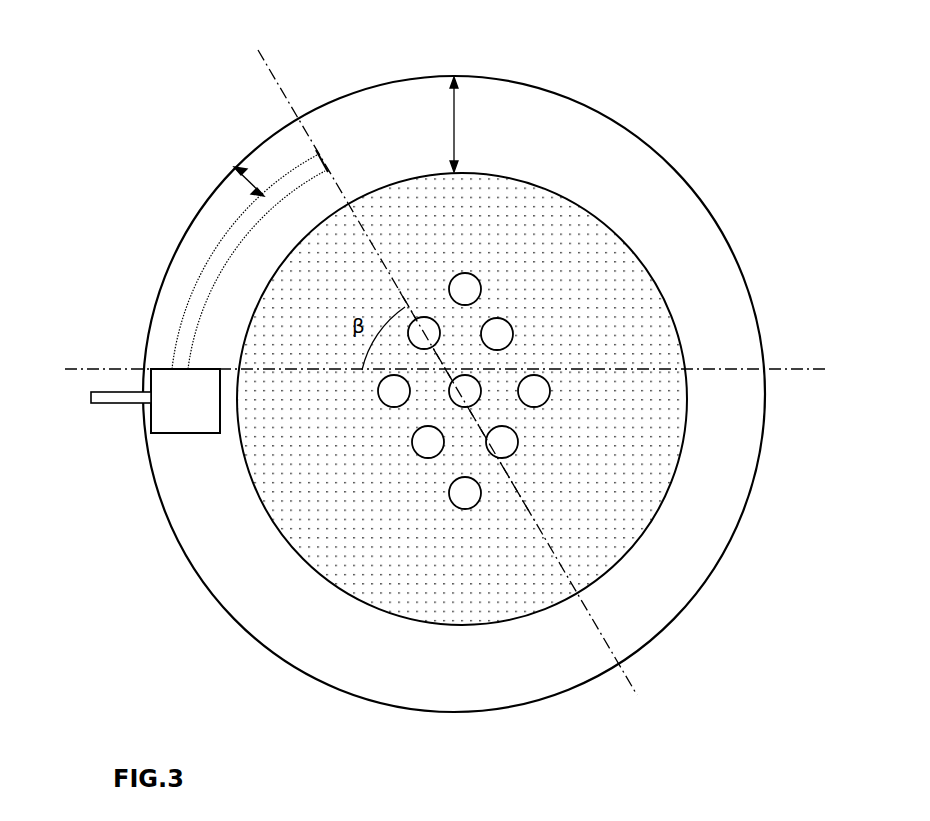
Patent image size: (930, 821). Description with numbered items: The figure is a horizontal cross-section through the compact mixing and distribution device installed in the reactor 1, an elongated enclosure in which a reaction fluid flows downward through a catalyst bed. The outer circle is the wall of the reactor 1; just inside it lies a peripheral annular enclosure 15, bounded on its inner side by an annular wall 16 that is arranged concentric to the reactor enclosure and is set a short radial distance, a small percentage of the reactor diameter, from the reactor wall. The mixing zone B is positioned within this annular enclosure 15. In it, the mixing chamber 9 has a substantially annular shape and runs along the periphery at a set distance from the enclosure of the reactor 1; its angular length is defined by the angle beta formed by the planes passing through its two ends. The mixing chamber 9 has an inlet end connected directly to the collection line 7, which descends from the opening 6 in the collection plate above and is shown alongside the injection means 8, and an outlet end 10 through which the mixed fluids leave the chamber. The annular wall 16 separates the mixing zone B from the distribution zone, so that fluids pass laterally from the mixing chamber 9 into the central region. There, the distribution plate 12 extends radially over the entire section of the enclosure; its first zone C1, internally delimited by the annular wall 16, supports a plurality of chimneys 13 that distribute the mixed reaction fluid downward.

The reactor 1 is at (632, 653).
The opening 6 is at (192, 418).
The collection line 7 is at (152, 368).
The injection means 8 is at (130, 405).
The mixing chamber 9 is at (213, 251).
The outlet end 10 is at (325, 163).
The distribution plate 12 is at (635, 348).
The chimneys 13 is at (449, 492).
The annular enclosure 15 is at (487, 655).
The annular wall 16 is at (562, 197).
The mixing zone B is at (670, 257).
The first zone C1 is at (601, 471).